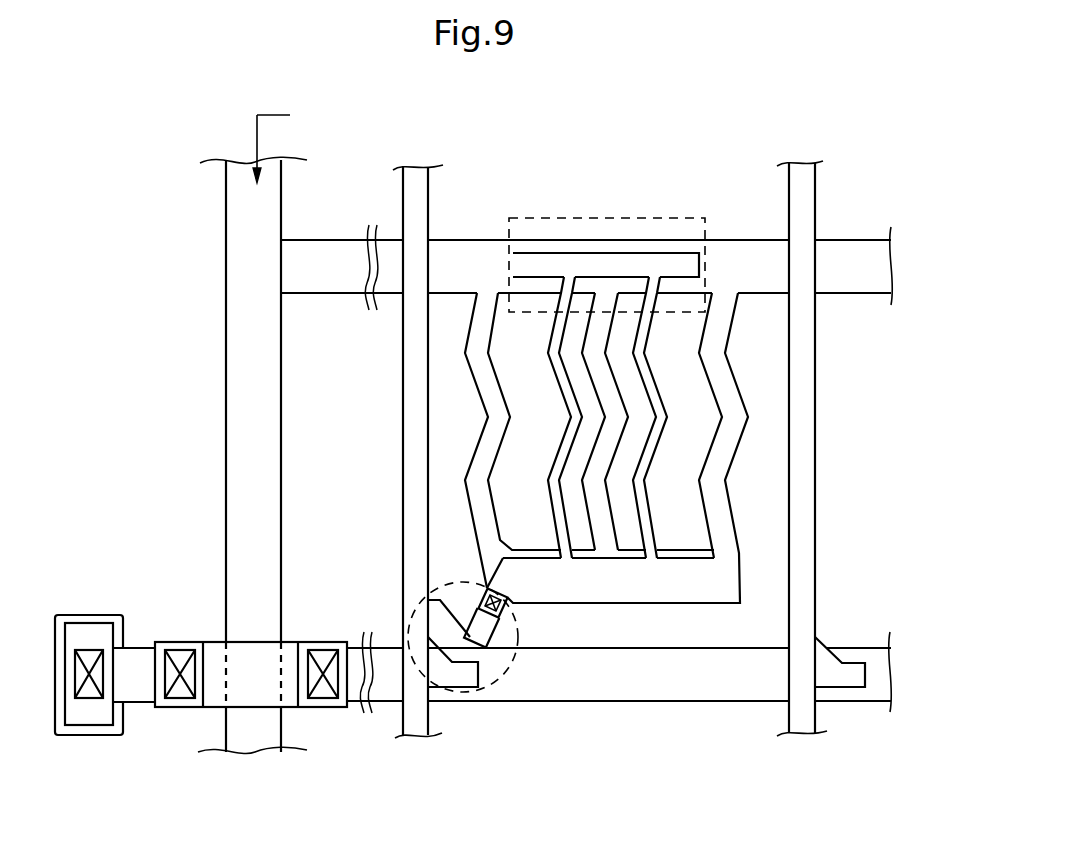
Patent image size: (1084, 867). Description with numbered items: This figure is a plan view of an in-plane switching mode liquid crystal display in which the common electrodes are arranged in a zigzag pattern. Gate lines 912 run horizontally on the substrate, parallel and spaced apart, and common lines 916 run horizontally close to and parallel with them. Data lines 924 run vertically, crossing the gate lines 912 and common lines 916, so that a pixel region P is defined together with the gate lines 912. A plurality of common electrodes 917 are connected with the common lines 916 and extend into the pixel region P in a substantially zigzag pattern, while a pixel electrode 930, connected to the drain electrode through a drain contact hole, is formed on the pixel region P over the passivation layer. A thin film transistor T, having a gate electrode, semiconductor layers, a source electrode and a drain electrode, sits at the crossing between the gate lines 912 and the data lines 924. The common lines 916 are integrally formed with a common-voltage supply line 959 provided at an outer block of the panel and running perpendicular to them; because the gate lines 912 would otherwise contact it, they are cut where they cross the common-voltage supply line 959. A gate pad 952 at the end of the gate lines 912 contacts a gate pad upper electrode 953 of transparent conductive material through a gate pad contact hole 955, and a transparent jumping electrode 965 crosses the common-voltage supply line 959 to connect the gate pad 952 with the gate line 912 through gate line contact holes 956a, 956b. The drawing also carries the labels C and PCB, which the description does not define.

The gate lines 912 is at (355, 653).
The common lines 916 is at (862, 267).
The common electrodes 917 is at (720, 527).
The data lines 924 is at (806, 437).
The pixel electrode 930 is at (648, 383).
The gate pad 952 is at (105, 715).
The gate pad upper electrode 953 is at (67, 737).
The gate pad contact hole 955 is at (95, 650).
The gate line contact hole 956a is at (180, 650).
The gate line contact hole 956b is at (327, 692).
The common-voltage supply line 959 is at (240, 457).
The jumping electrode 965 is at (255, 688).
The storage capacitor C is at (641, 217).
The thin film transistor T is at (443, 584).
The pixel region P is at (771, 519).
The printed circuit board PCB is at (293, 143).